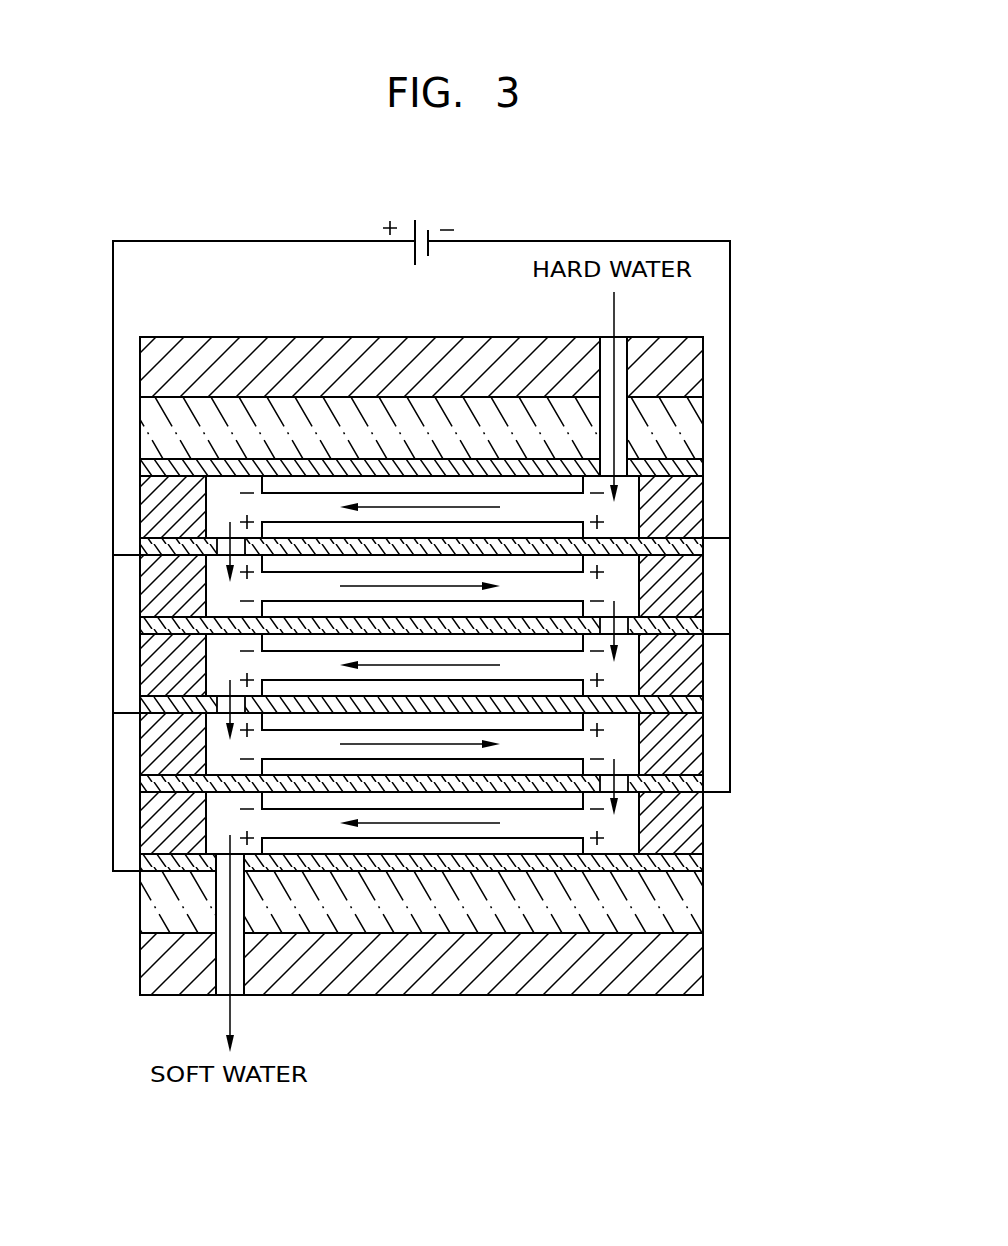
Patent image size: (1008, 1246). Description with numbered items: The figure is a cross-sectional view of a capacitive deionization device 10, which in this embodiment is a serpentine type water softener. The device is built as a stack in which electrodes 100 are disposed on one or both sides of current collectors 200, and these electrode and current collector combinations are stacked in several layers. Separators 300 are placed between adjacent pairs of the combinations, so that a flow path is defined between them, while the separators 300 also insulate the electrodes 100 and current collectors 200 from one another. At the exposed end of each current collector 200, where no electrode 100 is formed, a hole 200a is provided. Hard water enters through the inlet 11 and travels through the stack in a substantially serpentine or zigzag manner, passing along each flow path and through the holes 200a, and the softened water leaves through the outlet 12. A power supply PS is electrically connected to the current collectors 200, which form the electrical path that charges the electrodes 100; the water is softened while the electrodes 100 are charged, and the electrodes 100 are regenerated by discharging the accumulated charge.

The capacitive deionization device 10 is at (757, 288).
The inlet 11 is at (618, 343).
The outlet 12 is at (225, 988).
The electrode 100 is at (550, 846).
The current collector 200 is at (705, 469).
The hole 200a is at (223, 542).
The separator 300 is at (705, 512).
The power supply PS is at (421, 529).